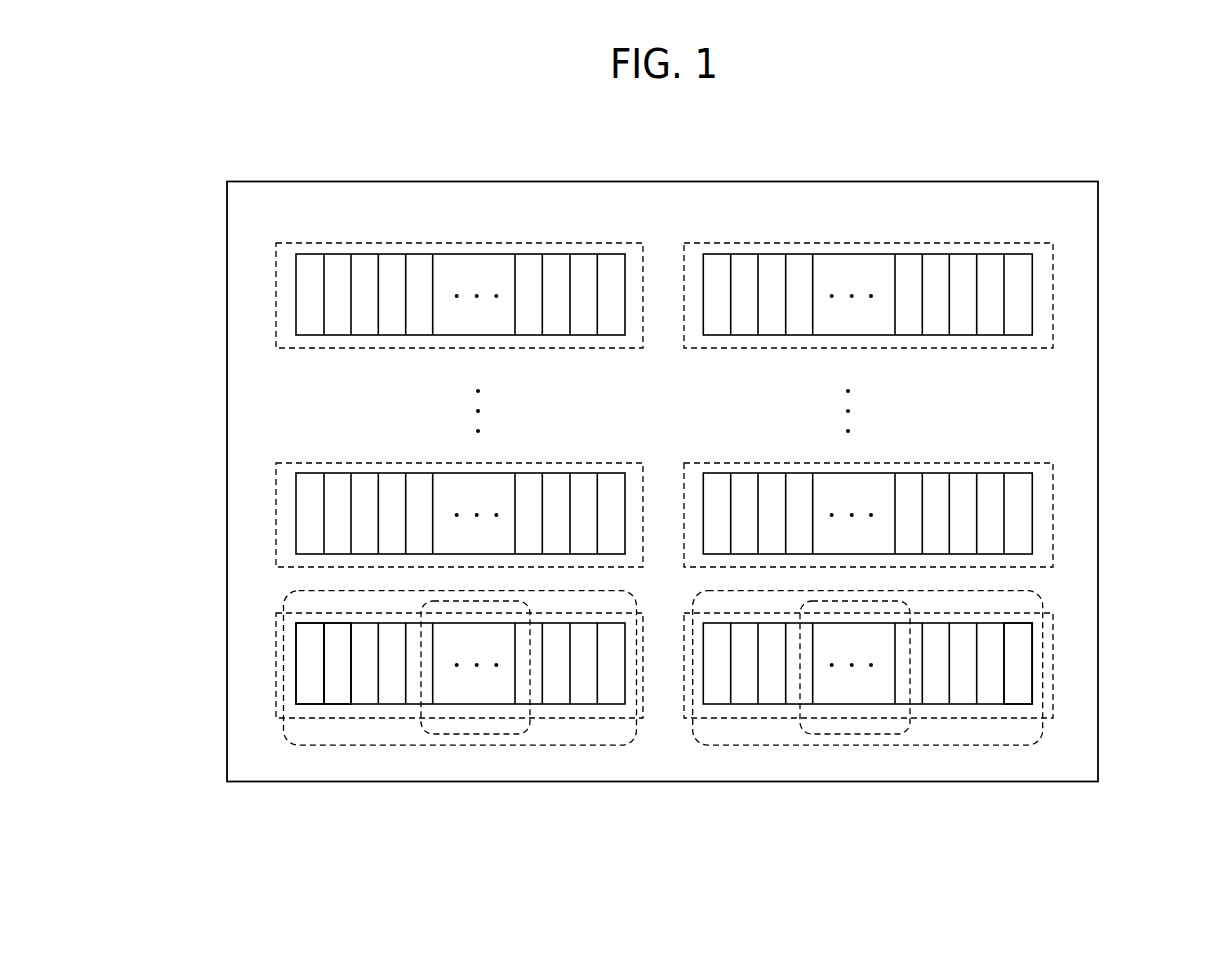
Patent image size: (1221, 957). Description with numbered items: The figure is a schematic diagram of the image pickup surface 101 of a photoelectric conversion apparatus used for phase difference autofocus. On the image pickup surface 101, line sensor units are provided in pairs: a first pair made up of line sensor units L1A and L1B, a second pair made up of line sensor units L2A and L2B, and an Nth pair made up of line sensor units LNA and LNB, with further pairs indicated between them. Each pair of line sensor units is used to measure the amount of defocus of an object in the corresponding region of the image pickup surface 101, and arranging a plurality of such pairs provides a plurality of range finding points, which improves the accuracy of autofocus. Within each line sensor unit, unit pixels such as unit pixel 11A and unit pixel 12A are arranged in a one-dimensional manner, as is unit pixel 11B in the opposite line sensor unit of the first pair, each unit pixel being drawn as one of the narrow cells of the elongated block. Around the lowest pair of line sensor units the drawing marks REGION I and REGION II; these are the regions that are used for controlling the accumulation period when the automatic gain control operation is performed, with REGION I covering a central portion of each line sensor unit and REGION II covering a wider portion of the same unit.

The image pickup surface 101 is at (958, 182).
The line sensor unit LNA is at (272, 291).
The line sensor unit LNB is at (1052, 294).
The line sensor unit L2A is at (272, 520).
The line sensor unit L2B is at (1052, 517).
The line sensor unit L1A is at (272, 664).
The line sensor unit L1B is at (1052, 657).
The unit pixel 11A is at (307, 707).
The unit pixel 12A is at (336, 707).
The unit pixel 11B is at (1012, 707).
The Region I REGION I is at (468, 745).
The Region II REGION II is at (803, 728).